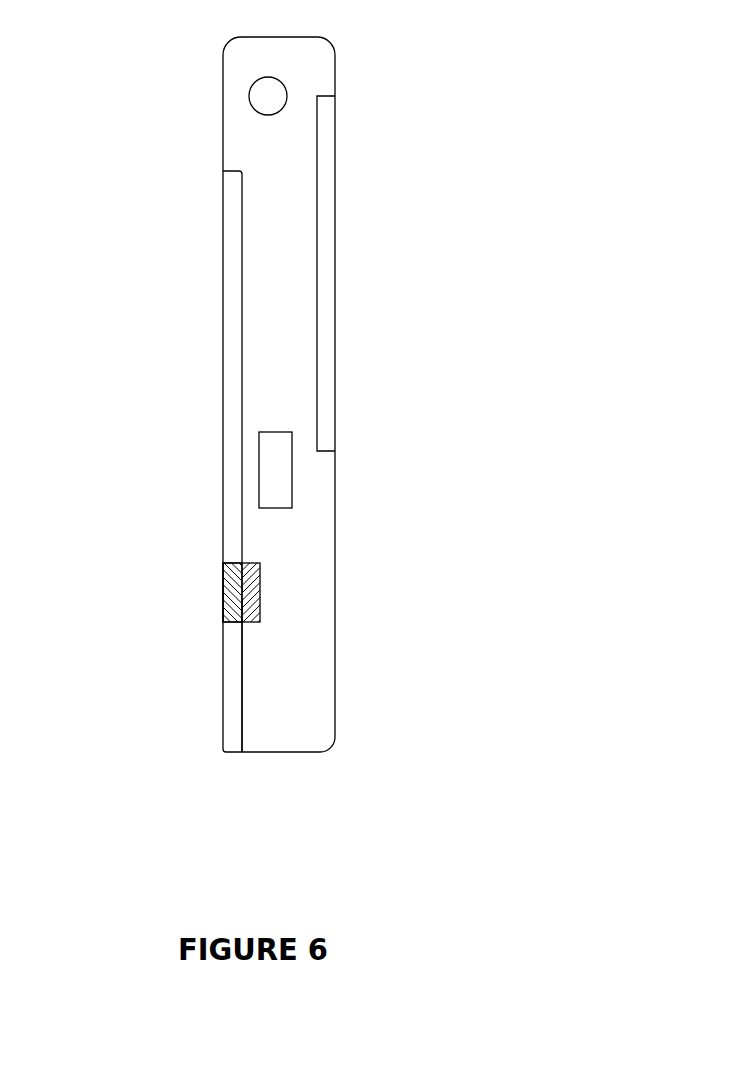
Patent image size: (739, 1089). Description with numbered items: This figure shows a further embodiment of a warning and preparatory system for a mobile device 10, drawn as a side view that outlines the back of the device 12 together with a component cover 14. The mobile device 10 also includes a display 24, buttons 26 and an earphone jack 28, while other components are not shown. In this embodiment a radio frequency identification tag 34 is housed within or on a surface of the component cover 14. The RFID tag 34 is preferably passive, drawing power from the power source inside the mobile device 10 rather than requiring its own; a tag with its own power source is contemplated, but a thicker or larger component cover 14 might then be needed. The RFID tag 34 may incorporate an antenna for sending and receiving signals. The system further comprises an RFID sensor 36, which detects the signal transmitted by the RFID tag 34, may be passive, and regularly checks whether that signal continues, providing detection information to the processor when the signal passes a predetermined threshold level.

The mobile device 10 is at (392, 740).
The back of the device 12 is at (242, 683).
The component cover 14 is at (217, 227).
The display 24 is at (336, 327).
The buttons 26 is at (297, 457).
The earphone jack 28 is at (280, 82).
The RFID tag 34 is at (217, 583).
The RFID sensor 36 is at (260, 603).